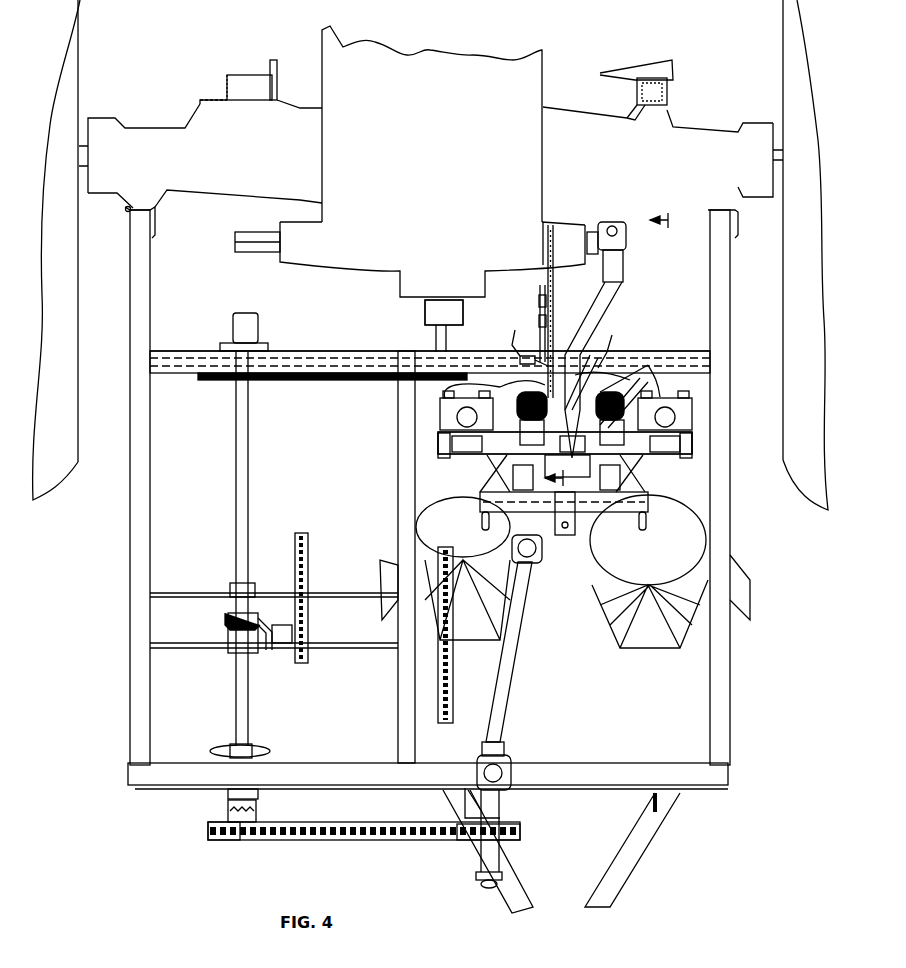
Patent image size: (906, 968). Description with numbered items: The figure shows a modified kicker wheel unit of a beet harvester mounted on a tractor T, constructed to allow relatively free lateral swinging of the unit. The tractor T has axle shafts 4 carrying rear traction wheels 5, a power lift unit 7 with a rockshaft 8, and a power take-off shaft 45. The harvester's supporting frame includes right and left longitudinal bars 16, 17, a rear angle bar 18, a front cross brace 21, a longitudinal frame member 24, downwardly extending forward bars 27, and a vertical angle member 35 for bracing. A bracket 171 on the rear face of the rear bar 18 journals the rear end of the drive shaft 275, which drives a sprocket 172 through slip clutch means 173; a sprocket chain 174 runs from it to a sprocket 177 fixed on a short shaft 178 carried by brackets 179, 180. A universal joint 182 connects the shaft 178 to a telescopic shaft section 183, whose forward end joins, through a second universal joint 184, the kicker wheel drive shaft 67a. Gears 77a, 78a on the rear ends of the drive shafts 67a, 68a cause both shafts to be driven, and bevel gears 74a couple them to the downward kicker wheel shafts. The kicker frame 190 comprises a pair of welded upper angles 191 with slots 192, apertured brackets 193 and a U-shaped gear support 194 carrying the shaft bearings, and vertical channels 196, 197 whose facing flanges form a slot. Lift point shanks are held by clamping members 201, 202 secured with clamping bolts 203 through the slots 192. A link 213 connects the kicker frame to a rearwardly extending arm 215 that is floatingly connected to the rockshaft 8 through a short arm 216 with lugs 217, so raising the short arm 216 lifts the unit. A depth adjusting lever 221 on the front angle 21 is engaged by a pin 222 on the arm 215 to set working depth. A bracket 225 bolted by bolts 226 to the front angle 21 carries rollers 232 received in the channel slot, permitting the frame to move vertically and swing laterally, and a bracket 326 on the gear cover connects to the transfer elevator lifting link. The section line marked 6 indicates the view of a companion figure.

The tractor T is at (318, 40).
The axle shafts 4 is at (88, 158).
The rear traction wheels 5 is at (80, 72).
The section line indicator 6 is at (614, 350).
The power lift unit 7 is at (352, 270).
The rockshaft 8 is at (243, 240).
The right hand longitudinal bar 16 is at (718, 370).
The left hand longitudinal bar 17 is at (135, 525).
The rear angle bar 18 is at (343, 768).
The cross brace 21 is at (172, 358).
The longitudinal frame member 24 is at (404, 462).
The forward frame bars 27 is at (128, 212).
The vertical angle member 35 is at (227, 85).
The power take-off shaft 45 is at (436, 332).
The kicker wheel drive shaft 67a is at (488, 476).
The kicker wheel drive shaft 68a is at (648, 462).
The bevel gears 74a is at (640, 378).
The gear 77a is at (476, 505).
The gear 78a is at (658, 512).
The bracket 171 is at (258, 794).
The sprocket 172 is at (236, 840).
The slip clutch means 173 is at (222, 810).
The sprocket chain 174 is at (352, 840).
The sprocket 177 is at (518, 832).
The short shaft 178 is at (478, 882).
The bracket 179 is at (498, 878).
The bracket 180 is at (498, 815).
The universal joint 182 is at (508, 762).
The telescopic shaft section 183 is at (510, 642).
The universal joint 184 is at (508, 552).
The kicker frame 190 is at (698, 446).
The upper angles 191 is at (438, 440).
The slots 192 is at (460, 450).
The apertured brackets 193 is at (650, 362).
The gear support 194 is at (650, 478).
The channel 196 is at (530, 392).
The channel 197 is at (602, 408).
The clamping member 201 is at (432, 410).
The clamping member 202 is at (696, 405).
The clamping bolts 203 is at (445, 392).
The link 213 is at (590, 362).
The arm 215 is at (583, 306).
The short arm 216 is at (627, 237).
The lugs 217 is at (626, 270).
The depth adjusting lever 221 is at (548, 250).
The pin 222 is at (538, 340).
The bracket 225 is at (520, 360).
The bolts 226 is at (515, 340).
The rollers 232 is at (563, 466).
The drive shaft 275 is at (246, 710).
The bracket 326 is at (565, 538).